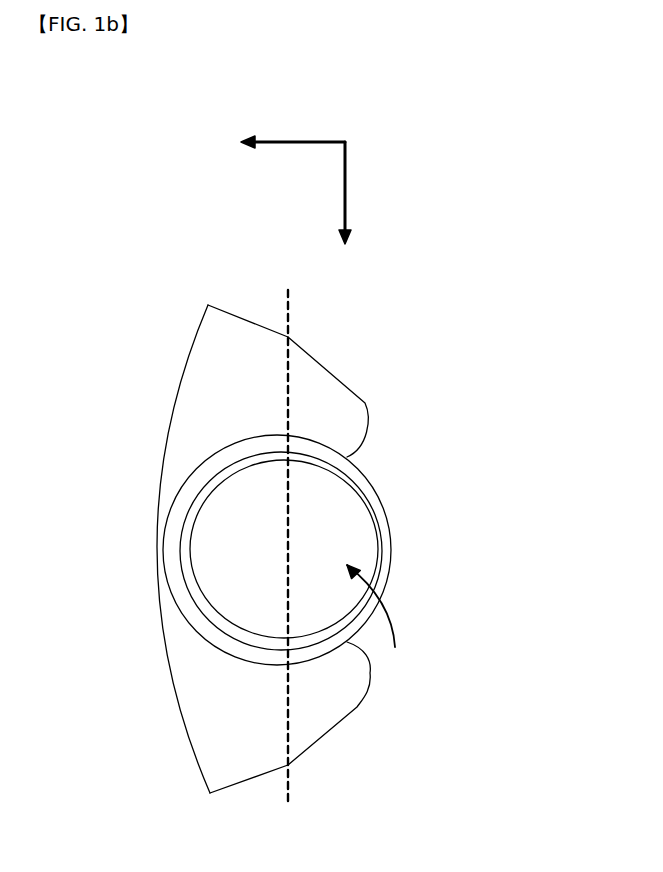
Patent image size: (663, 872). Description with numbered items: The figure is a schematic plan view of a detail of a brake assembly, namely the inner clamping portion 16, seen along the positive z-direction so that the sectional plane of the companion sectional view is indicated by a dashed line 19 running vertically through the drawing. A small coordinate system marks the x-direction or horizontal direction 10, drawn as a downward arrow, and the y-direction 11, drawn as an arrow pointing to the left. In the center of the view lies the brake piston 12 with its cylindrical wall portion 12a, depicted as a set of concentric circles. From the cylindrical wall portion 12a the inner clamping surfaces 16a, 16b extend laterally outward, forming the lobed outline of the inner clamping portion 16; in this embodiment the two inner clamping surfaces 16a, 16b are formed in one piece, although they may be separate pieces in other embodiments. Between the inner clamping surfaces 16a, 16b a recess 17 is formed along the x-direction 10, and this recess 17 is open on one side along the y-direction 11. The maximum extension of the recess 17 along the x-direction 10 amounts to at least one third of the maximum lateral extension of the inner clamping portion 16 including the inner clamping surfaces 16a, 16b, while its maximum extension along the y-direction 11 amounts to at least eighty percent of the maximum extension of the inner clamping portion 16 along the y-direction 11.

The x-direction 10 is at (338, 190).
The y-direction 11 is at (298, 143).
The brake piston 12 is at (388, 572).
The cylindrical wall portion 12a is at (365, 473).
The inner clamping portion 16 is at (188, 735).
The inner clamping surface 16a is at (322, 350).
The inner clamping surface 16b is at (342, 735).
The recess 17 is at (385, 623).
The dashed line 19 is at (287, 512).